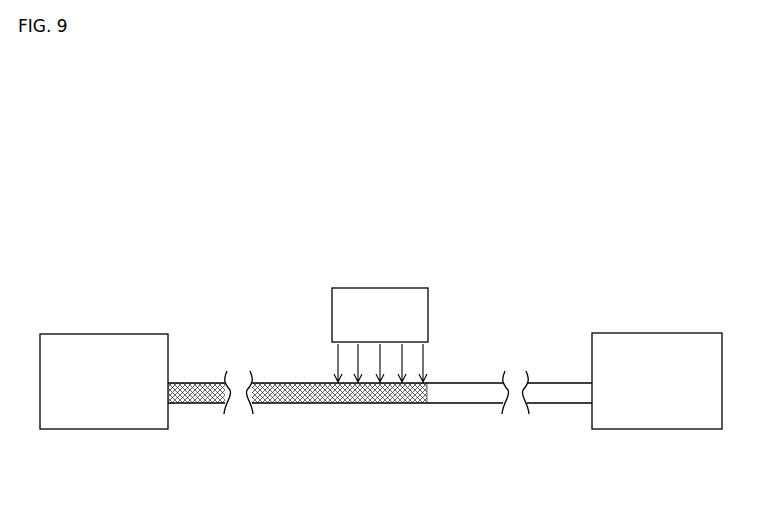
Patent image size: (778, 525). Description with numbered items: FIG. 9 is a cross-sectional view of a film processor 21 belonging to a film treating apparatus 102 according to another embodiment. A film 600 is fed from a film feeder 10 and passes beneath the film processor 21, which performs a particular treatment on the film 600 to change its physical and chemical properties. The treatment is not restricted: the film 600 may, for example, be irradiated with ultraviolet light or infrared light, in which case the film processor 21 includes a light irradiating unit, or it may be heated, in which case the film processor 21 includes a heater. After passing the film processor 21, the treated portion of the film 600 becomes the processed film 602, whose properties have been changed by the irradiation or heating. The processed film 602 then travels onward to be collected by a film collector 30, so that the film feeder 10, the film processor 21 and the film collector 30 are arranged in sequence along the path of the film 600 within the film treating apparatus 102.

The film treating apparatus 102 is at (494, 190).
The film feeder 10 is at (679, 419).
The film collector 30 is at (106, 419).
The film processor 21 is at (380, 302).
The film 600 is at (454, 393).
The processed film 602 is at (300, 394).